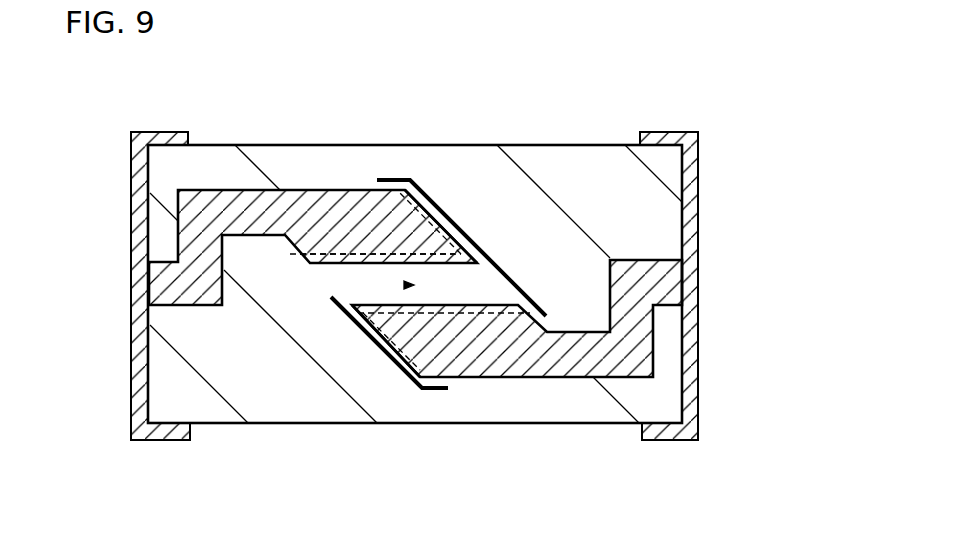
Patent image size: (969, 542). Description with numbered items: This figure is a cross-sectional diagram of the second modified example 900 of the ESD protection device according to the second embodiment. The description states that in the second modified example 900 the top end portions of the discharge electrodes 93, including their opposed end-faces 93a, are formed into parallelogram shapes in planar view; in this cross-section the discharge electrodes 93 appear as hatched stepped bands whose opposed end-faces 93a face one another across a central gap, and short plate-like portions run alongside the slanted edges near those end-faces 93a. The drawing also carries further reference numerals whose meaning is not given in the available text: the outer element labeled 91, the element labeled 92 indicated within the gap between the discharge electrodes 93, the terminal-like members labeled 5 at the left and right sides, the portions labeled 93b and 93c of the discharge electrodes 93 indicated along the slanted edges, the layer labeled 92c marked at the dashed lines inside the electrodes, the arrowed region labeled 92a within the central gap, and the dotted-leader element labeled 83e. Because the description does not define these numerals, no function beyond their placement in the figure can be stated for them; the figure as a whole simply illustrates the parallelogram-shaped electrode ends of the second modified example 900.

The second modified example 900 is at (68, 78).
The element body 91 is at (650, 160).
The insulating body 92 is at (487, 288).
The discharge electrodes 93 is at (150, 272).
The external terminal 5 is at (140, 387).
The opposed end-faces 93a is at (385, 178).
The conductor edge portion 93b is at (485, 255).
The conductor inner layer 93c is at (468, 248).
The insulating layer 92c is at (478, 252).
The insulating portion 92a is at (410, 285).
The insulating film 83e is at (470, 236).